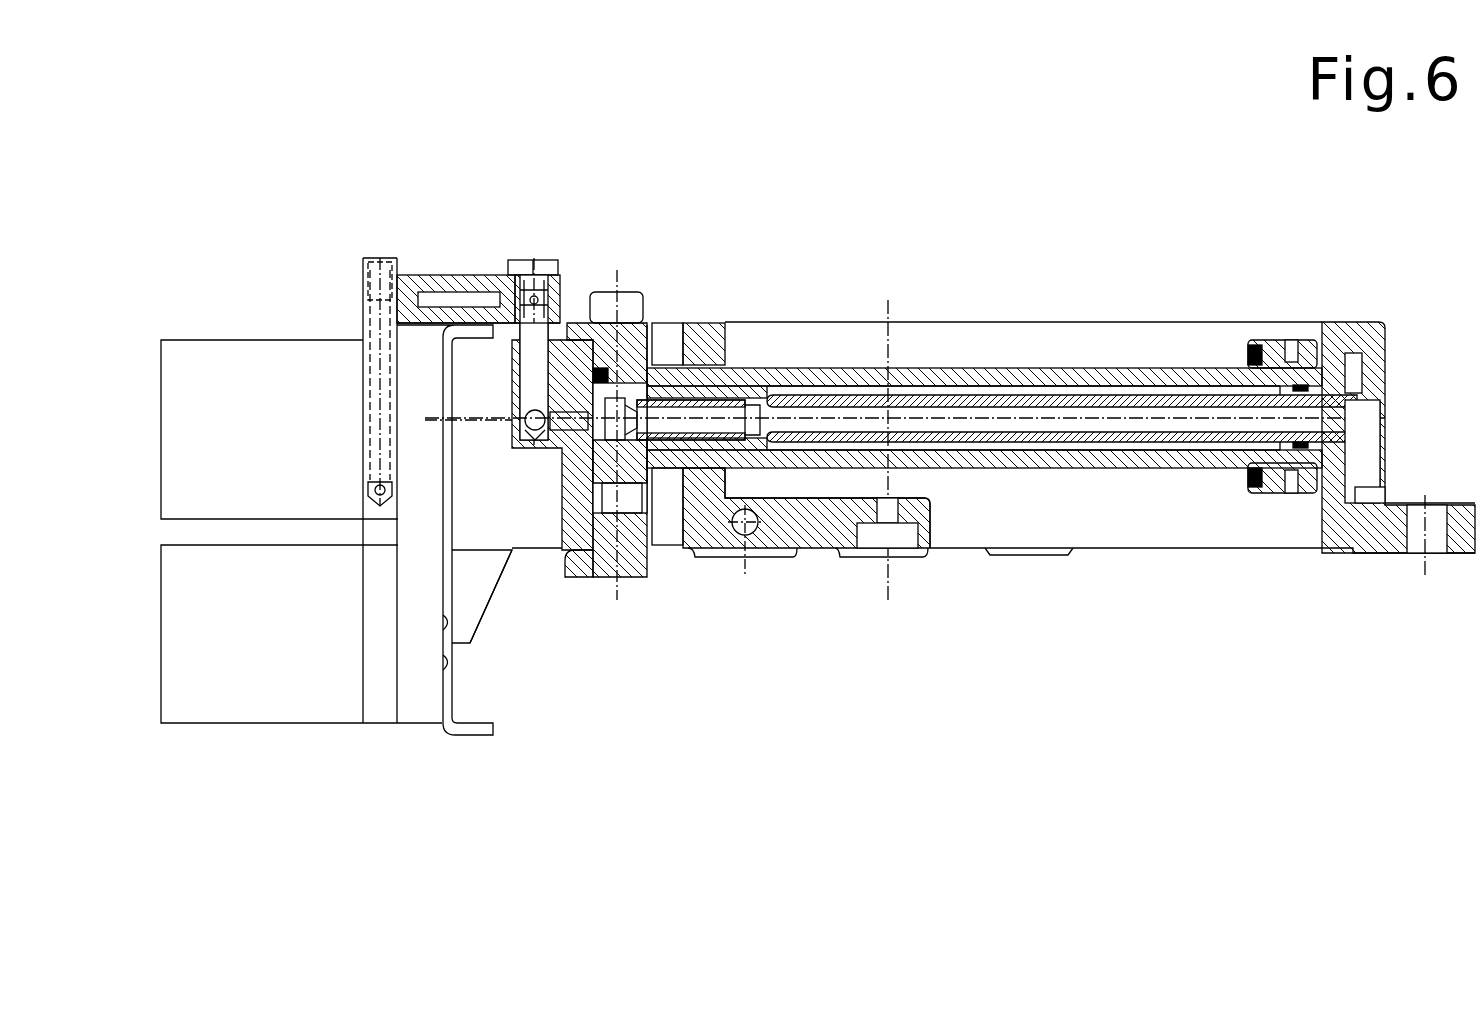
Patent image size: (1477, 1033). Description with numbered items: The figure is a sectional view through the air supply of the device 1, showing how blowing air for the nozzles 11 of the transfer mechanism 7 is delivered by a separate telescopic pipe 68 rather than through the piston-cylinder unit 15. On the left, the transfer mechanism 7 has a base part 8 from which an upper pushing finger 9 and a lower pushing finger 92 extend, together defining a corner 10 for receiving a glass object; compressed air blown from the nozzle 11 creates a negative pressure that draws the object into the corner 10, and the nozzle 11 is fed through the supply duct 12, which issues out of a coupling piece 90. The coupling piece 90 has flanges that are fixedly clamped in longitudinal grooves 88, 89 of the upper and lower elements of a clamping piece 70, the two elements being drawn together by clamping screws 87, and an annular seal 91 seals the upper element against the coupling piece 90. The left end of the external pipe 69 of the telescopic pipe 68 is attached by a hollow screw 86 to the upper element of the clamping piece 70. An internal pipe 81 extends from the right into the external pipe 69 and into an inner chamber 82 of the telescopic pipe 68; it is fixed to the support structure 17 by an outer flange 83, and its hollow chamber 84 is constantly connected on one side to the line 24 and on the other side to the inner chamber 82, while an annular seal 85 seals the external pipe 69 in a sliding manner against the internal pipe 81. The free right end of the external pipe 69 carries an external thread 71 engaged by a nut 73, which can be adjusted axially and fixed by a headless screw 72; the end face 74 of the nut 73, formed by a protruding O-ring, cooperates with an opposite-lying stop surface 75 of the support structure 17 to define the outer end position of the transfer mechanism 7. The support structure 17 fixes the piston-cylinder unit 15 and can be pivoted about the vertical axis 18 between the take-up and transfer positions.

The device 1 is at (1082, 180).
The transfer mechanism 7 is at (468, 738).
The base part 8 is at (584, 578).
The pushing finger 9 is at (212, 355).
The corner 10 is at (330, 360).
The nozzle 11 is at (376, 490).
The supply duct 12 is at (440, 298).
The piston-cylinder unit 15 is at (1110, 347).
The support structure 17 is at (786, 558).
The vertical axis 18 is at (890, 590).
The line 24 is at (1430, 480).
The telescopic pipe 68 is at (950, 368).
The external pipe 69 is at (1005, 398).
The clamping piece 70 is at (637, 340).
The external thread 71 is at (1068, 366).
The headless screw 72 is at (1292, 342).
The nut 73 is at (1270, 345).
The end face 74 is at (1254, 488).
The stop surface 75 is at (727, 343).
The internal pipe 81 is at (1124, 445).
The inner chamber 82 is at (760, 410).
The outer flange 83 is at (1368, 360).
The hollow chamber 84 is at (1185, 425).
The annular seal 85 is at (1300, 482).
The hollow screw 86 is at (690, 408).
The clamping screw 87 is at (607, 303).
The longitudinal groove 88 is at (580, 340).
The longitudinal groove 89 is at (580, 575).
The coupling piece 90 is at (577, 510).
The annular seal 91 is at (598, 375).
The lower pushing finger 92 is at (233, 705).